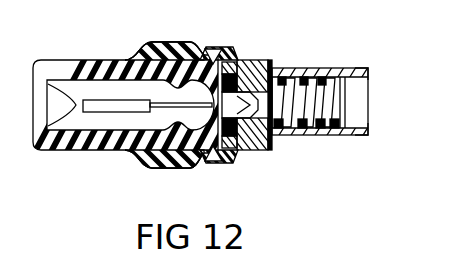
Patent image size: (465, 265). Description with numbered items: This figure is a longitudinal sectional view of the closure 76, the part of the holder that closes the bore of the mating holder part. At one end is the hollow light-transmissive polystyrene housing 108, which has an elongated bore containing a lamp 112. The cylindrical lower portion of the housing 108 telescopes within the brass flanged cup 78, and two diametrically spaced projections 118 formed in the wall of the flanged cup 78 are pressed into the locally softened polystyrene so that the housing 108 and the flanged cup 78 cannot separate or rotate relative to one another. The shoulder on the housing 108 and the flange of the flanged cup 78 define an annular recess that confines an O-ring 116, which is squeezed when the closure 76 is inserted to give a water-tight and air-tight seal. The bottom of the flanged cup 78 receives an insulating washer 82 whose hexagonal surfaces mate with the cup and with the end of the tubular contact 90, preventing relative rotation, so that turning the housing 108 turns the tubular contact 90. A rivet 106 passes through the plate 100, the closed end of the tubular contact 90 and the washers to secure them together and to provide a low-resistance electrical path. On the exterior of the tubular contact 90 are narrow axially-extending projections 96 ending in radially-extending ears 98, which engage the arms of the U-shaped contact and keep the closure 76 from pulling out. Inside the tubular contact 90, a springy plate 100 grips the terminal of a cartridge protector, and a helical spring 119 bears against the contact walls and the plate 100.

The closure 76 is at (100, 209).
The flanged cup 78 is at (236, 62).
The washer 82 is at (252, 72).
The tubular contact 90 is at (297, 72).
The axially-extending projections 96 is at (332, 72).
The radially-extending ears 98 is at (362, 66).
The plate 100 is at (368, 76).
The rivet 106 is at (276, 133).
The housing 108 is at (62, 68).
The lamp 112 is at (72, 112).
The O-ring 116 is at (177, 42).
The projections 118 is at (209, 54).
The helical spring 119 is at (338, 95).